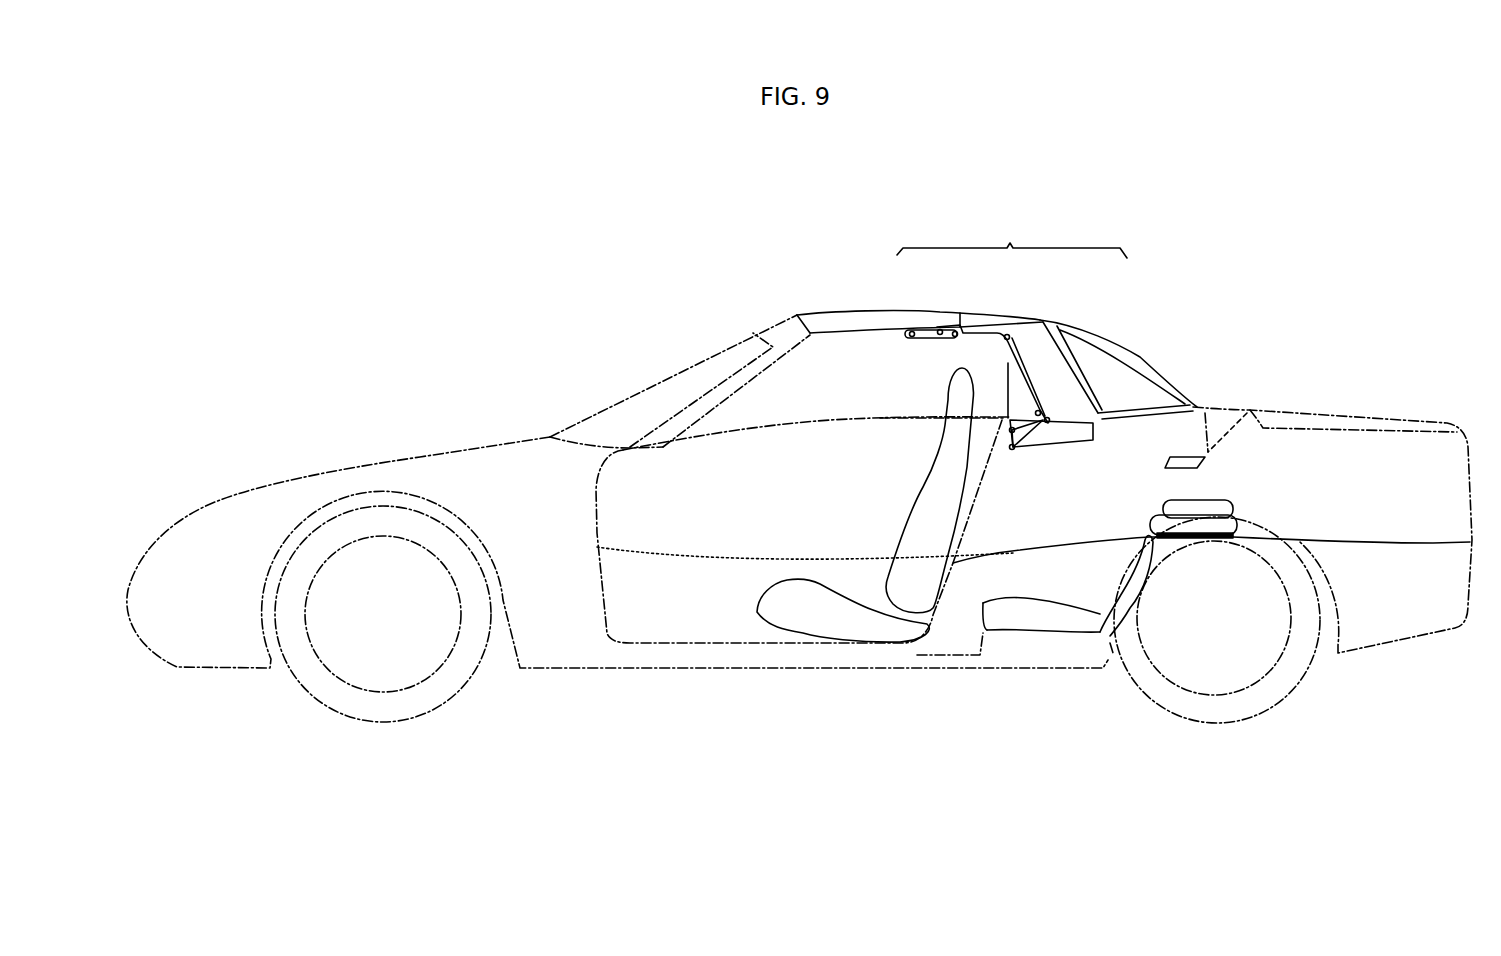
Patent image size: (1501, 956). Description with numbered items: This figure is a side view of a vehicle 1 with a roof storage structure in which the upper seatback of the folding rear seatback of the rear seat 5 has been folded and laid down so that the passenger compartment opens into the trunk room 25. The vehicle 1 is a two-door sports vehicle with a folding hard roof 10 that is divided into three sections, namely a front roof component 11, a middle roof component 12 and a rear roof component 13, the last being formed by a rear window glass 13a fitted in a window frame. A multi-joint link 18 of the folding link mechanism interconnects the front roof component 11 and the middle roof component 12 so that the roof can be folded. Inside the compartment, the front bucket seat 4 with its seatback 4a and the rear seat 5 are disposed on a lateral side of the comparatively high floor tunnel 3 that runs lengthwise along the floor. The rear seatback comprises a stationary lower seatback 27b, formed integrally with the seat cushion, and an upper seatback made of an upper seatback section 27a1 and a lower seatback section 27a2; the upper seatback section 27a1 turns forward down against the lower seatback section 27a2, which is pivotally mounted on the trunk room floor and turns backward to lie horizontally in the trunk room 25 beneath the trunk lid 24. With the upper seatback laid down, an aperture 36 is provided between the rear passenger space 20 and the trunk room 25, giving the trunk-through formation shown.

The vehicle 1 is at (602, 383).
The floor tunnel 3 is at (720, 560).
The front bucket seat 4 is at (867, 550).
The front seat back 4a is at (925, 480).
The rear seat 5 is at (1060, 633).
The folding hard roof 10 is at (1012, 236).
The front roof component 11 is at (902, 312).
The middle roof component 12 is at (1013, 312).
The rear roof component 13 is at (1093, 327).
The rear window glass 13a is at (1128, 360).
The multi-joint link 18 is at (1008, 363).
The rear passenger space 20 is at (1048, 511).
The trunk lid 24 is at (1350, 413).
The trunk room 25 is at (1396, 507).
The upper seatback section 27a1 is at (1230, 498).
The lower seatback section 27a2 is at (1237, 523).
The stationary lower seatback 27b is at (1137, 565).
The aperture 36 is at (1177, 487).